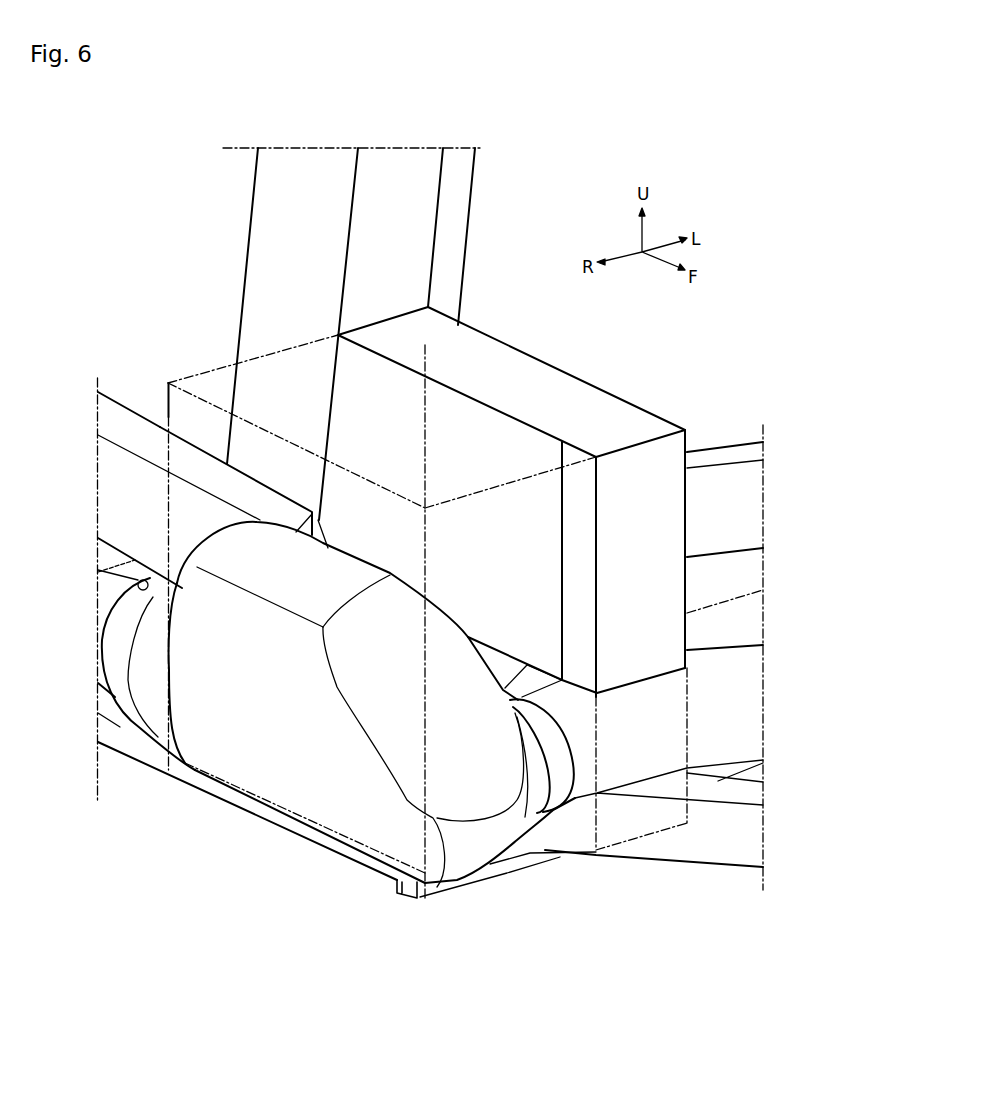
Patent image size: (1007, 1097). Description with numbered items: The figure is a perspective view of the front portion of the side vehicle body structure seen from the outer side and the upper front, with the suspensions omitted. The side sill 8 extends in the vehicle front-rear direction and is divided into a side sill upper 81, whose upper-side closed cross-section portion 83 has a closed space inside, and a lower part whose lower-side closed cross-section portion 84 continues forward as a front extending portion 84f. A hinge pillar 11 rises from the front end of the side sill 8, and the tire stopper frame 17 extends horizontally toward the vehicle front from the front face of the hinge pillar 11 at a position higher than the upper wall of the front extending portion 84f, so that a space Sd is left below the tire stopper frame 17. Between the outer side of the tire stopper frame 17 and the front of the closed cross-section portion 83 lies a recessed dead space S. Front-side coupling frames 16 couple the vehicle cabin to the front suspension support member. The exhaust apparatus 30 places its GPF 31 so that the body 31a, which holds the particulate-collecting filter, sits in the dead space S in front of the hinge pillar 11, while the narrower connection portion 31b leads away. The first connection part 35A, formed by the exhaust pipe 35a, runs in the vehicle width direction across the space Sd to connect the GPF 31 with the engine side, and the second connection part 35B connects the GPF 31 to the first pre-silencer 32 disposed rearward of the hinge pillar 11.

The hinge pillar 11 is at (243, 257).
The dead space S is at (200, 377).
The tire stopper frame 17 is at (493, 340).
The front-side coupling frame 16 is at (713, 447).
The first connection part 35A is at (733, 648).
The space Sd is at (657, 835).
The side sill upper 81 is at (112, 395).
The side sill 8 is at (133, 410).
The upper-side closed cross-section portion 83 is at (123, 428).
The first pre-silencer 32 is at (110, 540).
The exhaust pipe 35a is at (110, 593).
The second connection part 35B is at (88, 648).
The exhaust apparatus 30 is at (250, 802).
The body 31a is at (297, 780).
The GPF 31 is at (200, 787).
The connection portion 31b is at (115, 695).
The lower-side closed cross-section portion 84 is at (153, 757).
The front extending portion 84f is at (337, 848).